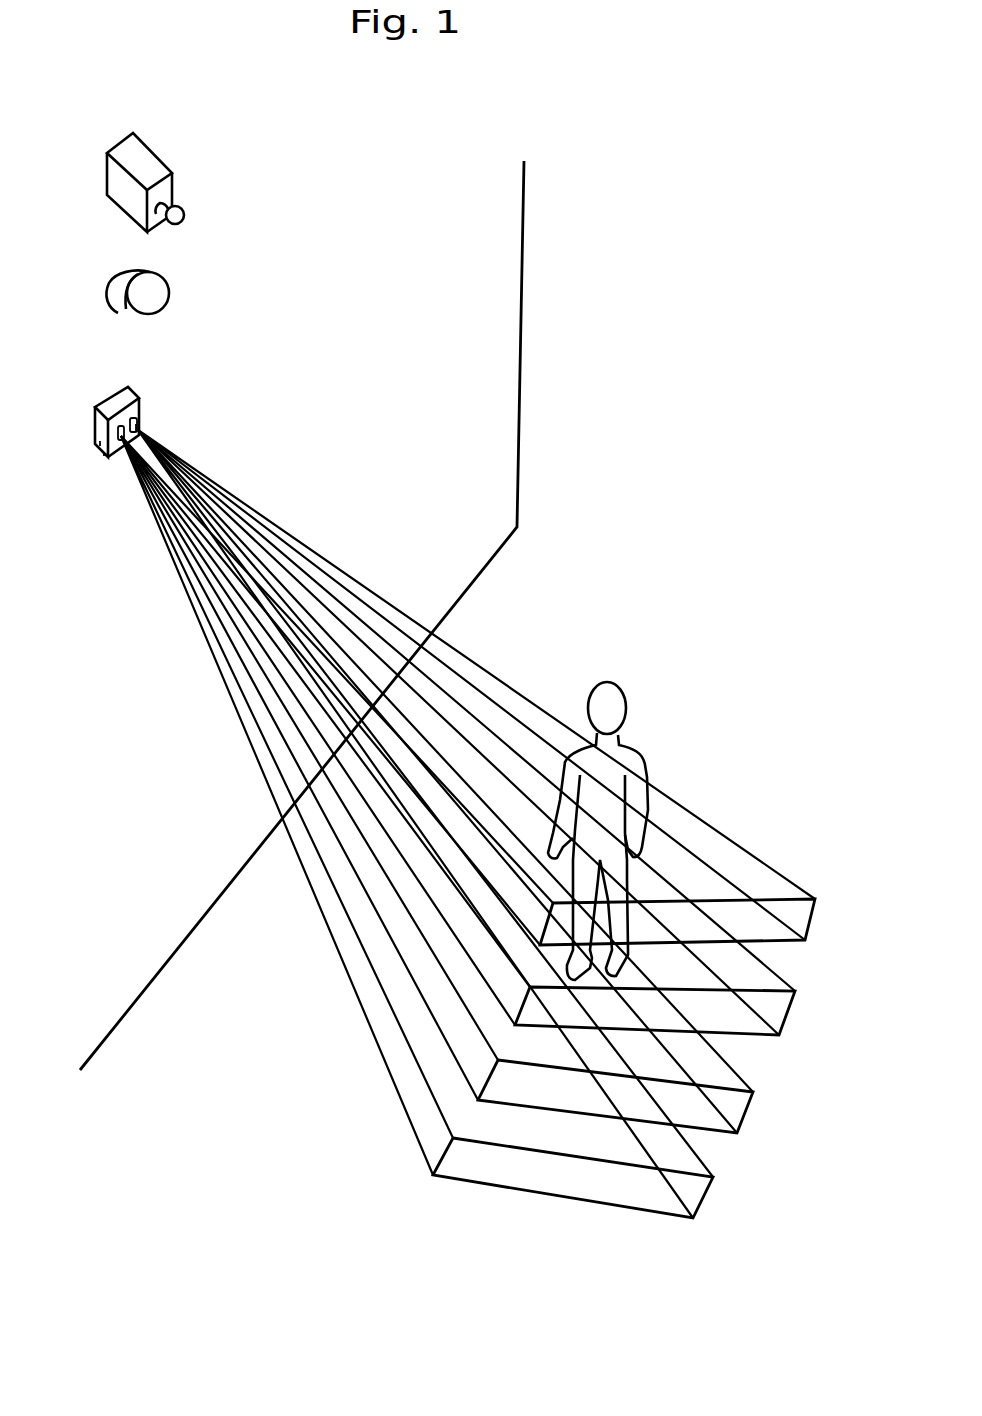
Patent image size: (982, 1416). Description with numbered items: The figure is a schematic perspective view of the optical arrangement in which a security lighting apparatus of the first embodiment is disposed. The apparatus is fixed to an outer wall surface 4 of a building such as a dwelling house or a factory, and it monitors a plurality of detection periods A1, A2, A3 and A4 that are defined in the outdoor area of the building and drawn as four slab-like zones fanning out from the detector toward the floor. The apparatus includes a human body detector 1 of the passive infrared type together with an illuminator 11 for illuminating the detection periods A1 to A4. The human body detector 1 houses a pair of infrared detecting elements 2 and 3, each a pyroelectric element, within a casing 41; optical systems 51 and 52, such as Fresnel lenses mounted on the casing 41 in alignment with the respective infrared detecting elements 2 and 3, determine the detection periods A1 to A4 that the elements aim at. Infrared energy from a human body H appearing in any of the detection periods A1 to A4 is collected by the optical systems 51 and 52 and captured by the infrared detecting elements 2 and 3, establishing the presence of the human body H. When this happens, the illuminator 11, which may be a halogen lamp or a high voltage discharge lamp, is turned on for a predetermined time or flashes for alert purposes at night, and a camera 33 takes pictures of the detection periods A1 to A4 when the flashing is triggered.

The human body detector 1 is at (157, 426).
The infrared detecting element 2 is at (143, 427).
The infrared detecting element 3 is at (107, 445).
The outer wall surface 4 is at (445, 558).
The illuminator 11 is at (168, 277).
The camera 33 is at (163, 155).
The casing 41 is at (140, 412).
The optical system 51 is at (143, 432).
The optical system 52 is at (107, 457).
The human body H is at (625, 692).
The detection period A1 is at (727, 850).
The detection period A2 is at (752, 973).
The detection period A3 is at (712, 1068).
The detection period A4 is at (682, 1155).